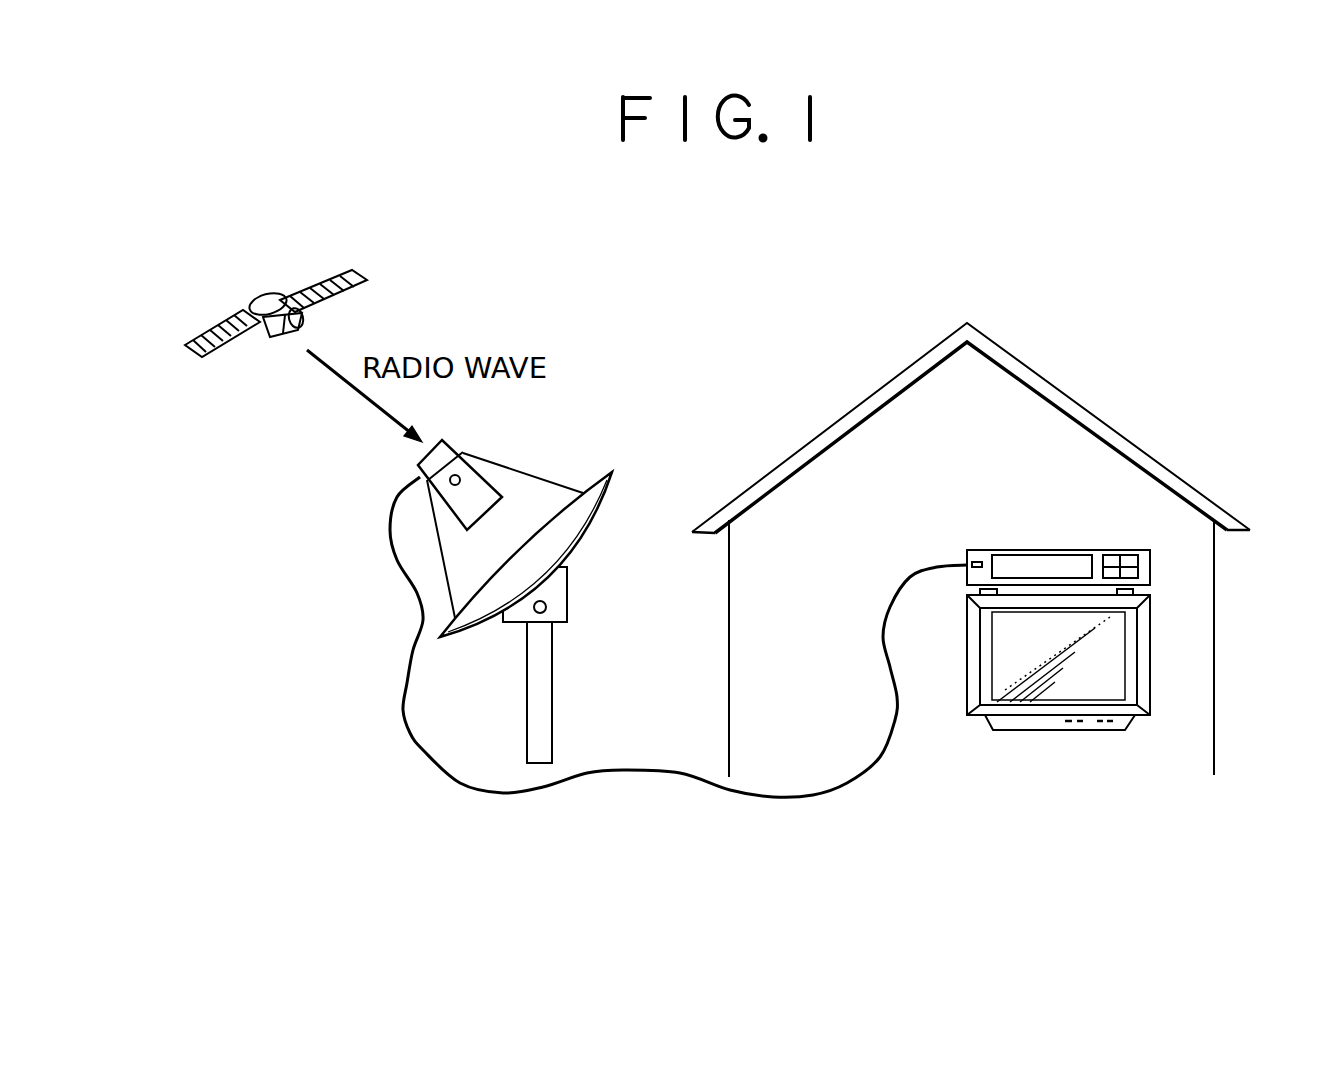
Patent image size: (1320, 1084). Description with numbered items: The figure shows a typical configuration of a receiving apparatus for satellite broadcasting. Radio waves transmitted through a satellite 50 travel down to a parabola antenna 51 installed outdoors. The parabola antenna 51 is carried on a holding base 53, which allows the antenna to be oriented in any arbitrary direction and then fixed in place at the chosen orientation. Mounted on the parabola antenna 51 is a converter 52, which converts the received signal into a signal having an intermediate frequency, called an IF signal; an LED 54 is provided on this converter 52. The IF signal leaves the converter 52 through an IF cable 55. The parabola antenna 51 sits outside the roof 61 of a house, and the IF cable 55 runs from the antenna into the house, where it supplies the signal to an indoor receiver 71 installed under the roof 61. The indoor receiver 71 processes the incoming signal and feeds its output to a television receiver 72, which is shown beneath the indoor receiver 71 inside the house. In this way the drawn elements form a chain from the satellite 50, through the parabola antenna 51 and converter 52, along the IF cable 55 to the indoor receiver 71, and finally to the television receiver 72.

The satellite 50 is at (252, 297).
The parabola antenna 51 is at (615, 485).
The converter 52 is at (420, 458).
The holding base 53 is at (567, 595).
The LED 54 is at (460, 476).
The IF cable 55 is at (590, 780).
The roof 61 is at (1075, 400).
The indoor receiver 71 is at (1030, 547).
The television receiver 72 is at (965, 698).